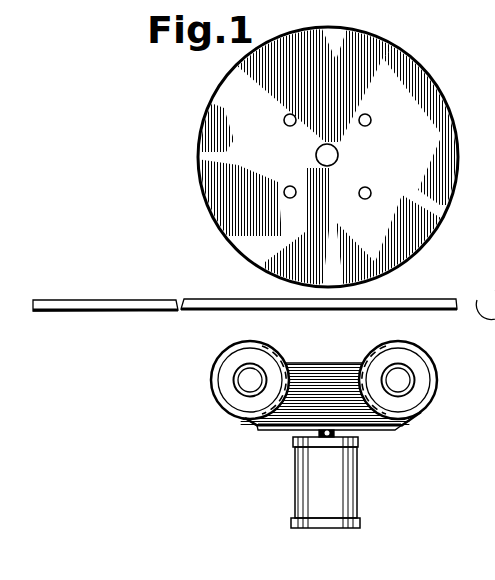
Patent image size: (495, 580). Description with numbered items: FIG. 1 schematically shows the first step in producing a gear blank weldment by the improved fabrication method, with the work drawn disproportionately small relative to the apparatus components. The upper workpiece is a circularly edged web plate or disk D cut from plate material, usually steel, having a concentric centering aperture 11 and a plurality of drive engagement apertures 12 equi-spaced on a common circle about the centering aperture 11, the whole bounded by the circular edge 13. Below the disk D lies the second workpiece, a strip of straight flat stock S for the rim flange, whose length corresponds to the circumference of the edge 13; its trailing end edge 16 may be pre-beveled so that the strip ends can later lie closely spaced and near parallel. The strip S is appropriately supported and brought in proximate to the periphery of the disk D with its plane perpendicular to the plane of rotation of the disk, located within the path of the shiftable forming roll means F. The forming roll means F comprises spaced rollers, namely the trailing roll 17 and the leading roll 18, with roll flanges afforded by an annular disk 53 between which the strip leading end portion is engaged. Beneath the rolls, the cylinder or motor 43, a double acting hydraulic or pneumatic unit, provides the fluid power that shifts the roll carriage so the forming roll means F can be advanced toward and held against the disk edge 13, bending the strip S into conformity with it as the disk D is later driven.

The web plate or disk D is at (305, 160).
The concentric centering aperture 11 is at (339, 152).
The drive engagement apertures 12 is at (292, 198).
The edge of disk 13 is at (199, 170).
The strip of straight flat stock S is at (257, 302).
The trailing end edge 16 is at (33, 311).
The trailing roll 17 is at (445, 409).
The leading roll 18 is at (212, 403).
The annular disk 53 is at (320, 377).
The forming roll means F is at (243, 426).
The cylinder or motor 43 is at (357, 478).